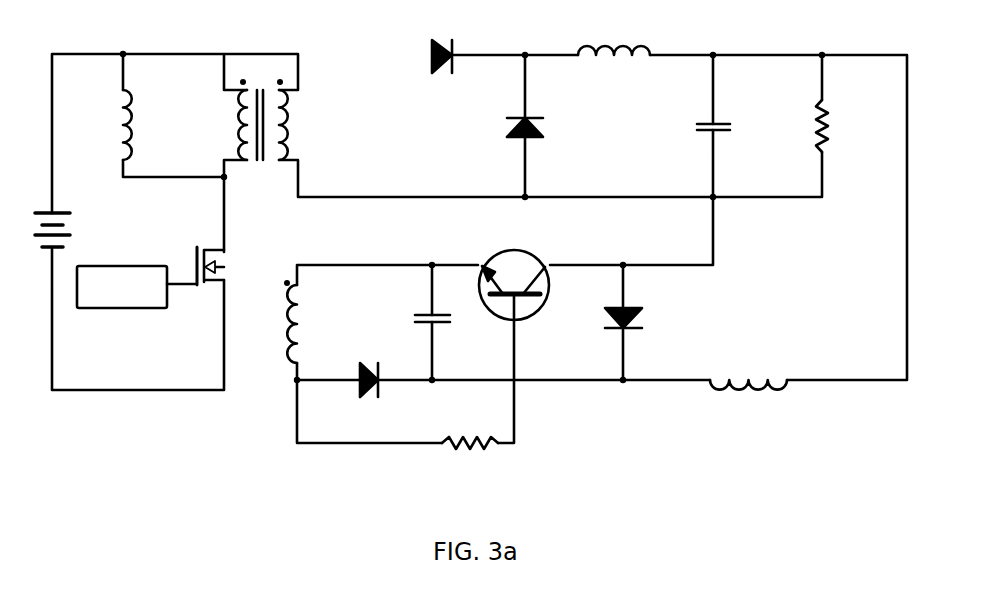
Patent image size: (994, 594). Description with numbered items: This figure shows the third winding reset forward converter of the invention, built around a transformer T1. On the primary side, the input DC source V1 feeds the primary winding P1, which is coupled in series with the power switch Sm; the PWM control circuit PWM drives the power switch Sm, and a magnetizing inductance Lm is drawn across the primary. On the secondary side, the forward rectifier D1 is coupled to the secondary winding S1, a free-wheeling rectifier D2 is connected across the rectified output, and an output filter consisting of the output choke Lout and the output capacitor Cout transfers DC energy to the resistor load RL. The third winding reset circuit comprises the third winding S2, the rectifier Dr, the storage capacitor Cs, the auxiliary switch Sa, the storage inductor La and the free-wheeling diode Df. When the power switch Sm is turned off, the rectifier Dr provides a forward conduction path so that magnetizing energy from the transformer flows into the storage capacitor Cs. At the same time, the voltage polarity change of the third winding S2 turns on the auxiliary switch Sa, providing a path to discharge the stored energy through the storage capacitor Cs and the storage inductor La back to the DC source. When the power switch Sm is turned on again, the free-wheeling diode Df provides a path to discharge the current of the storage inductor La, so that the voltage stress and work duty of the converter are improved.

The magnetizing inductor Lm is at (105, 125).
The primary winding P1 is at (221, 119).
The secondary winding S1 is at (297, 119).
The transformer T1 is at (257, 145).
The input DC source V1 is at (68, 226).
The PWM control circuit PWM is at (122, 287).
The power switch Sm is at (233, 267).
The third winding S2 is at (309, 321).
The rectifier diode Dr is at (363, 399).
The storage capacitor Cs is at (446, 328).
The auxiliary switch Sa is at (514, 271).
The free-wheeling diode Df is at (639, 322).
The storage inductor La is at (748, 373).
The forward rectifier D1 is at (438, 42).
The free-wheeling rectifier D2 is at (543, 131).
The output choke Lout is at (614, 38).
The output capacitor Cout is at (740, 122).
The resistor load RL is at (839, 126).